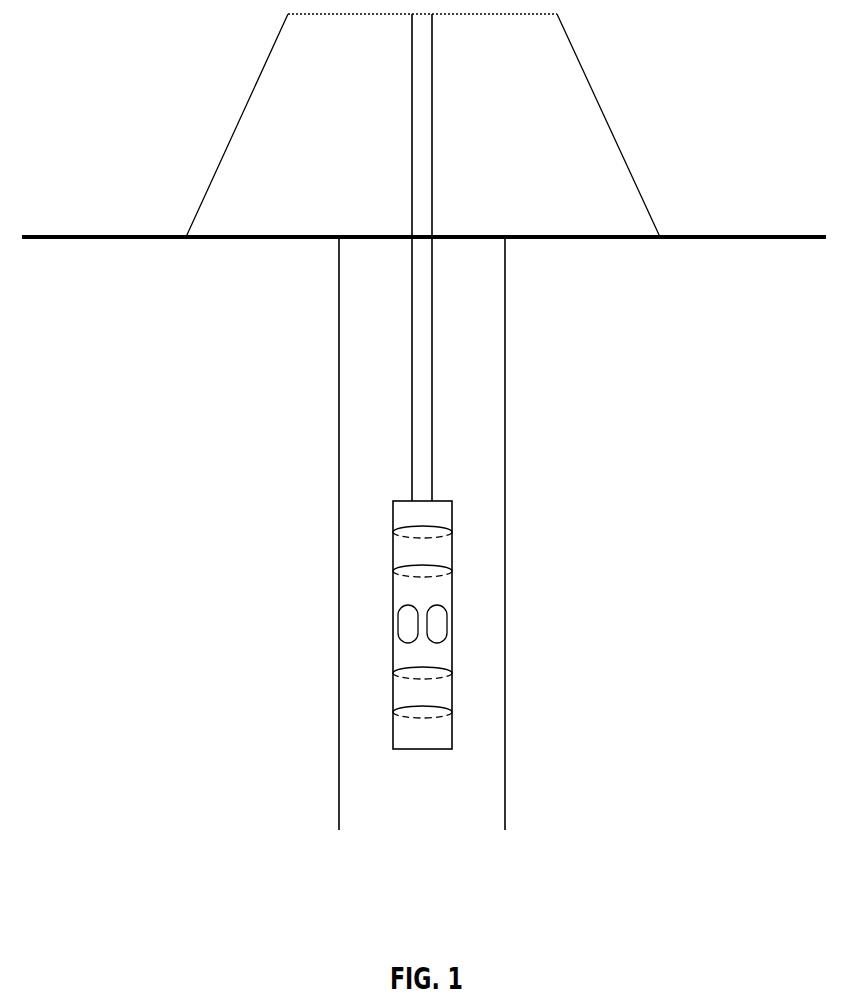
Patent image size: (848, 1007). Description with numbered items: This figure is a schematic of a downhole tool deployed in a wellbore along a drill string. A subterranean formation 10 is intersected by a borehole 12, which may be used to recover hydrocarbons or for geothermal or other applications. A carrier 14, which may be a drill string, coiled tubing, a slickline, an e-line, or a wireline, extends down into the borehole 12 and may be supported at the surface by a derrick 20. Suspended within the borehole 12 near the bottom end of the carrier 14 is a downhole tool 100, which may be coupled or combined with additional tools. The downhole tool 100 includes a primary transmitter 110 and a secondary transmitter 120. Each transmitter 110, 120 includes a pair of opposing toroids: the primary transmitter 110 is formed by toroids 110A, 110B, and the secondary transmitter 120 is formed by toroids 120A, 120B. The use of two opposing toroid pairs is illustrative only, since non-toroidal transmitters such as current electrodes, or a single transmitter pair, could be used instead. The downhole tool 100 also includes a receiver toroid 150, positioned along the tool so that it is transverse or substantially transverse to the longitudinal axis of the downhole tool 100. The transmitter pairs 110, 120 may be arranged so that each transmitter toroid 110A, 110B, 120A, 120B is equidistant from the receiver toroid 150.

The subterranean formation 10 is at (698, 463).
The borehole 12 is at (506, 415).
The carrier 14 is at (433, 385).
The derrick 20 is at (610, 127).
The downhole tool 100 is at (320, 456).
The primary transmitter 110 is at (452, 532).
The transmitter toroid 110A is at (393, 532).
The transmitter toroid 110B is at (393, 712).
The secondary transmitter 120 is at (452, 571).
The transmitter toroid 120A is at (393, 571).
The transmitter toroid 120B is at (393, 673).
The receiver toroid 150 is at (428, 622).